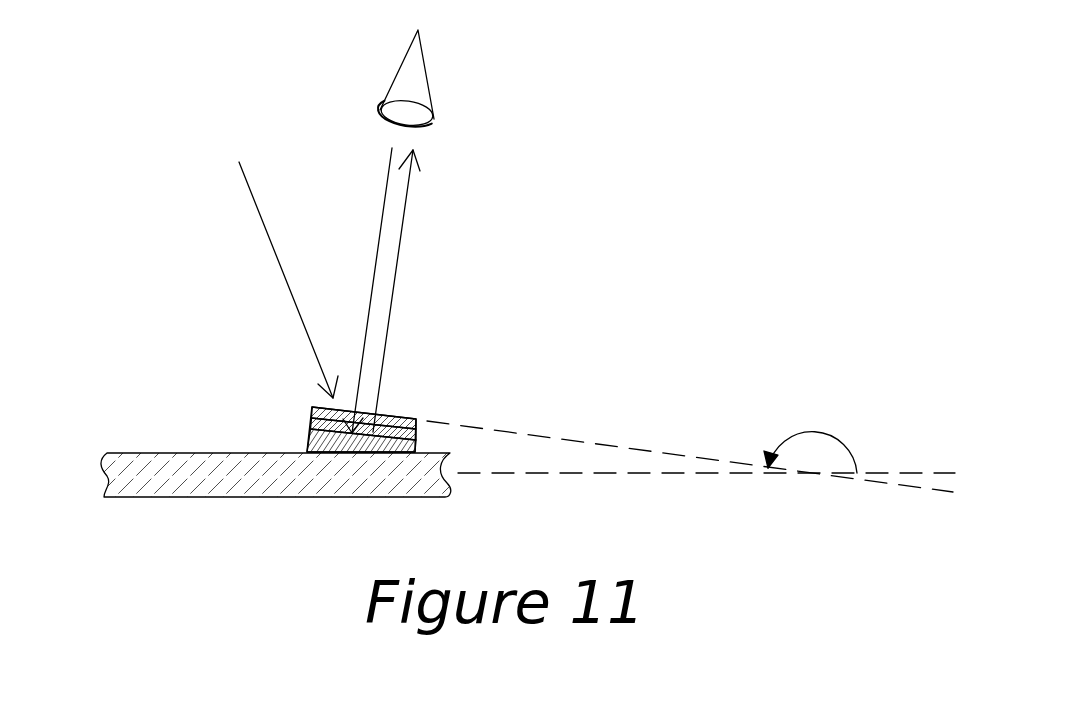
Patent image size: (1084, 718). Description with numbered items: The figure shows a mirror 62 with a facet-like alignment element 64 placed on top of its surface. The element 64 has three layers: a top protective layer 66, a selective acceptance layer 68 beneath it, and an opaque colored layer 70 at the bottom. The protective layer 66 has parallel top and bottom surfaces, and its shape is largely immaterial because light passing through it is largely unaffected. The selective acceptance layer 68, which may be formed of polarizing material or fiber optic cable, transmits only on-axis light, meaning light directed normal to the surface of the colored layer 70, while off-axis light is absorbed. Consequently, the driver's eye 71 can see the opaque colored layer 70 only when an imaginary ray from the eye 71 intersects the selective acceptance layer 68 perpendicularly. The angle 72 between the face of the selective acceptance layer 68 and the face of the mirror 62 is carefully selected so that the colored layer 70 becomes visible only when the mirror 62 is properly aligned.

The mirror 62 is at (130, 490).
The element 64 is at (364, 382).
The top protective layer 66 is at (410, 418).
The selective acceptance layer 68 is at (312, 418).
The opaque colored layer 70 is at (307, 438).
The driver's eye 71 is at (383, 92).
The angle 72 is at (850, 445).